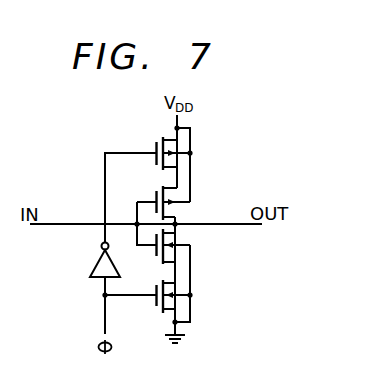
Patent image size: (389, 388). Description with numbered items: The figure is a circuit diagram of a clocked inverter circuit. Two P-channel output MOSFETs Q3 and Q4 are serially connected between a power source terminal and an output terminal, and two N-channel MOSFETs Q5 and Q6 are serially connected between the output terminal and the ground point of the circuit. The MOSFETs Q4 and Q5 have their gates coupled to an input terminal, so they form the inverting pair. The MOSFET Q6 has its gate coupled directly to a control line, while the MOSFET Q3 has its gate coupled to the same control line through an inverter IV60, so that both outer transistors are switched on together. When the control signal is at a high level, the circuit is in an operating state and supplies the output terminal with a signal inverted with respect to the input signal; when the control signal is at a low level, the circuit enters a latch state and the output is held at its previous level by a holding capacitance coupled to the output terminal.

The P-channel output MOSFET Q3 is at (185, 151).
The P-channel output MOSFET Q4 is at (185, 201).
The N-channel MOSFET Q5 is at (185, 250).
The N-channel MOSFET Q6 is at (185, 296).
The inverter IV60 is at (93, 266).